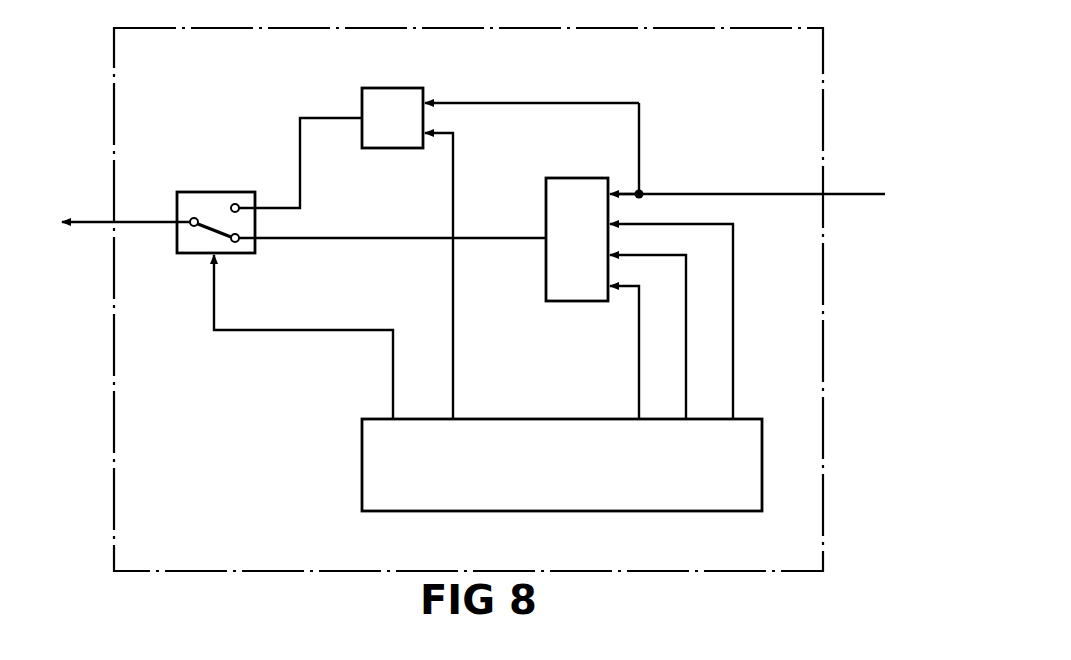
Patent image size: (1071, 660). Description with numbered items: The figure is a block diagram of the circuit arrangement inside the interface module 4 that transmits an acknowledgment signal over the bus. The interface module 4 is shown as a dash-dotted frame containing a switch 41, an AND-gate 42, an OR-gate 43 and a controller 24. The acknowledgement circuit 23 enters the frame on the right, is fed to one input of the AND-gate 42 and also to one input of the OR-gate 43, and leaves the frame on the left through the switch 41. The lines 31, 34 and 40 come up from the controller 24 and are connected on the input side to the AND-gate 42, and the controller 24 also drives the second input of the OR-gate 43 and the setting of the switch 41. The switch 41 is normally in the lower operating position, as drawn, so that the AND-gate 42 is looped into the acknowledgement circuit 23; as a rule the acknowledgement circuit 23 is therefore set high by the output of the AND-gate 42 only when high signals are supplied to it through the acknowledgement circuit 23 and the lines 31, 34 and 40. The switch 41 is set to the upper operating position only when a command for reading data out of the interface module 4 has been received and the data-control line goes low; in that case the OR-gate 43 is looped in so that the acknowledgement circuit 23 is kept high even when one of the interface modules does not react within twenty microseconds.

The interface module 4 is at (114, 370).
The acknowledgement circuit 23 is at (98, 222).
The controller 24 is at (362, 480).
The line 31 is at (733, 374).
The line 34 is at (686, 374).
The line 40 is at (662, 366).
The switch 41 is at (225, 192).
The AND-gate 42 is at (586, 178).
The OR-gate 43 is at (401, 88).